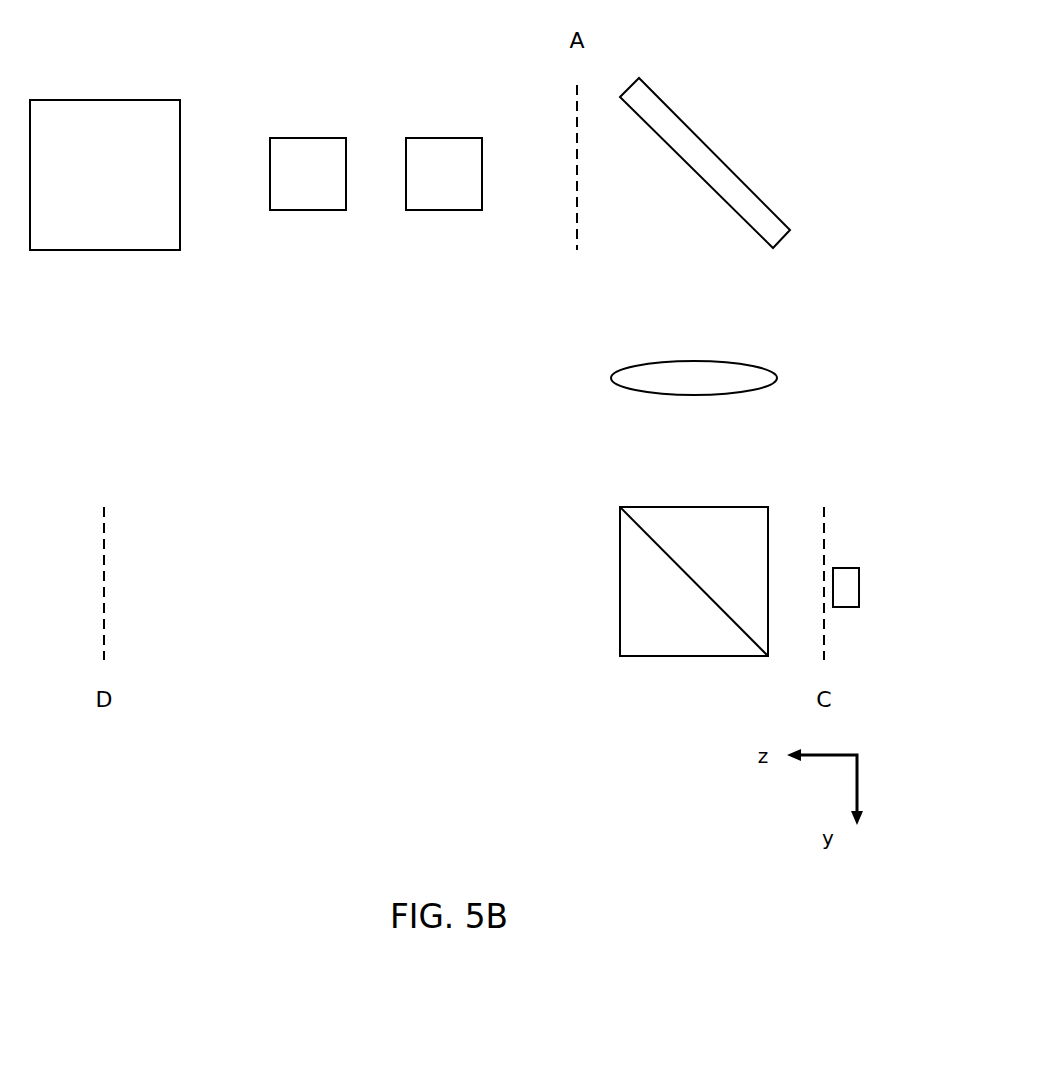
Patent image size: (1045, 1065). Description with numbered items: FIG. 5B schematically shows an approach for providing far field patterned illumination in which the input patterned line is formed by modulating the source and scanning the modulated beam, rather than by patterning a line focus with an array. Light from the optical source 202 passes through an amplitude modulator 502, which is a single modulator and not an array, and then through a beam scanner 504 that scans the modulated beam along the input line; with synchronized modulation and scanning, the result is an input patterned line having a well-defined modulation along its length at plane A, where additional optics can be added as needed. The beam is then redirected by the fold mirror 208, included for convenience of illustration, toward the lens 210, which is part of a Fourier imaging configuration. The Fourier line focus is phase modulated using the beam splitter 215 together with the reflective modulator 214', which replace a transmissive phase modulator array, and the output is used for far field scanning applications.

The optical source 202 is at (81, 188).
The amplitude modulator 502 is at (284, 186).
The beam scanner 504 is at (420, 186).
The fold mirror 208 is at (702, 160).
The lens 210 is at (695, 382).
The beam splitter 215 is at (667, 638).
The reflective modulator 214' is at (892, 587).